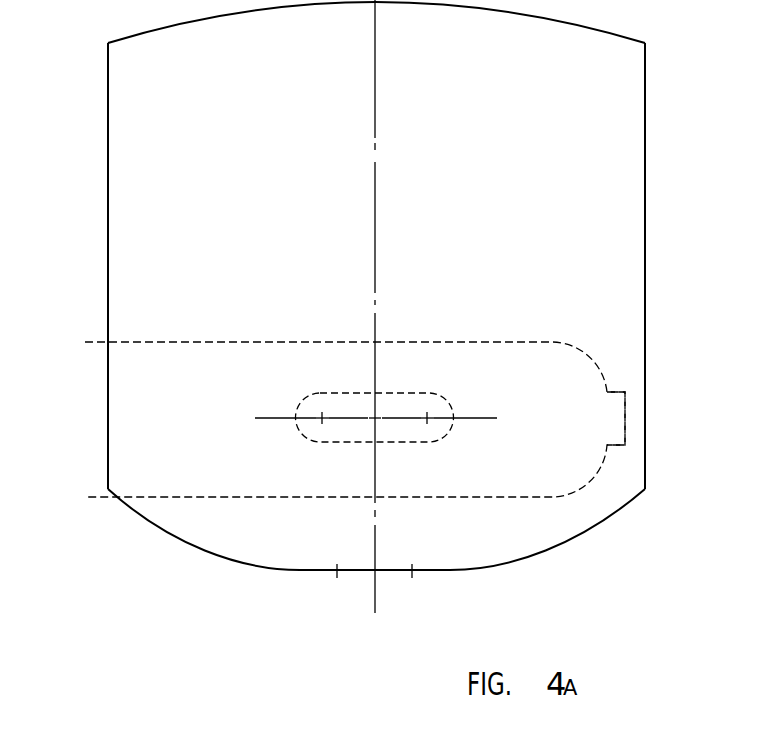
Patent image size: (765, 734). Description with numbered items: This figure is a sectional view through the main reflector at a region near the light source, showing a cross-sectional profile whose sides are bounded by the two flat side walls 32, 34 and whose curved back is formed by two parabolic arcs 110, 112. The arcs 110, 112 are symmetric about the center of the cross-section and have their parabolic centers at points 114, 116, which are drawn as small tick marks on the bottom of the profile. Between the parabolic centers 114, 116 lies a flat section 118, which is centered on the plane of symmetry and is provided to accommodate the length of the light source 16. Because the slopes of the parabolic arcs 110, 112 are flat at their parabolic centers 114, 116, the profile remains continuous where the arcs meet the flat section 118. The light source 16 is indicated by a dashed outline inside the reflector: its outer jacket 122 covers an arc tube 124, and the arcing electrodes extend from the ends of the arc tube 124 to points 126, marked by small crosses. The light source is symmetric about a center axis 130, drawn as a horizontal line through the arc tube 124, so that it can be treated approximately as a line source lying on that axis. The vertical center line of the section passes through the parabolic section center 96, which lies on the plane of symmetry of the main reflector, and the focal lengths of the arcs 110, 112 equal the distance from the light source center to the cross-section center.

The light source 16 is at (462, 341).
The flat side wall 32 is at (646, 128).
The flat side wall 34 is at (108, 134).
The parabolic section center 96 is at (375, 420).
The parabolic arc 110 is at (200, 546).
The parabolic arc 112 is at (546, 545).
The parabolic center 114 is at (335, 576).
The parabolic center 116 is at (413, 576).
The flat section 118 is at (365, 576).
The outer jacket 122 is at (596, 465).
The arc tube 124 is at (438, 441).
The electrode point 126 is at (322, 420).
The center axis 130 is at (280, 416).